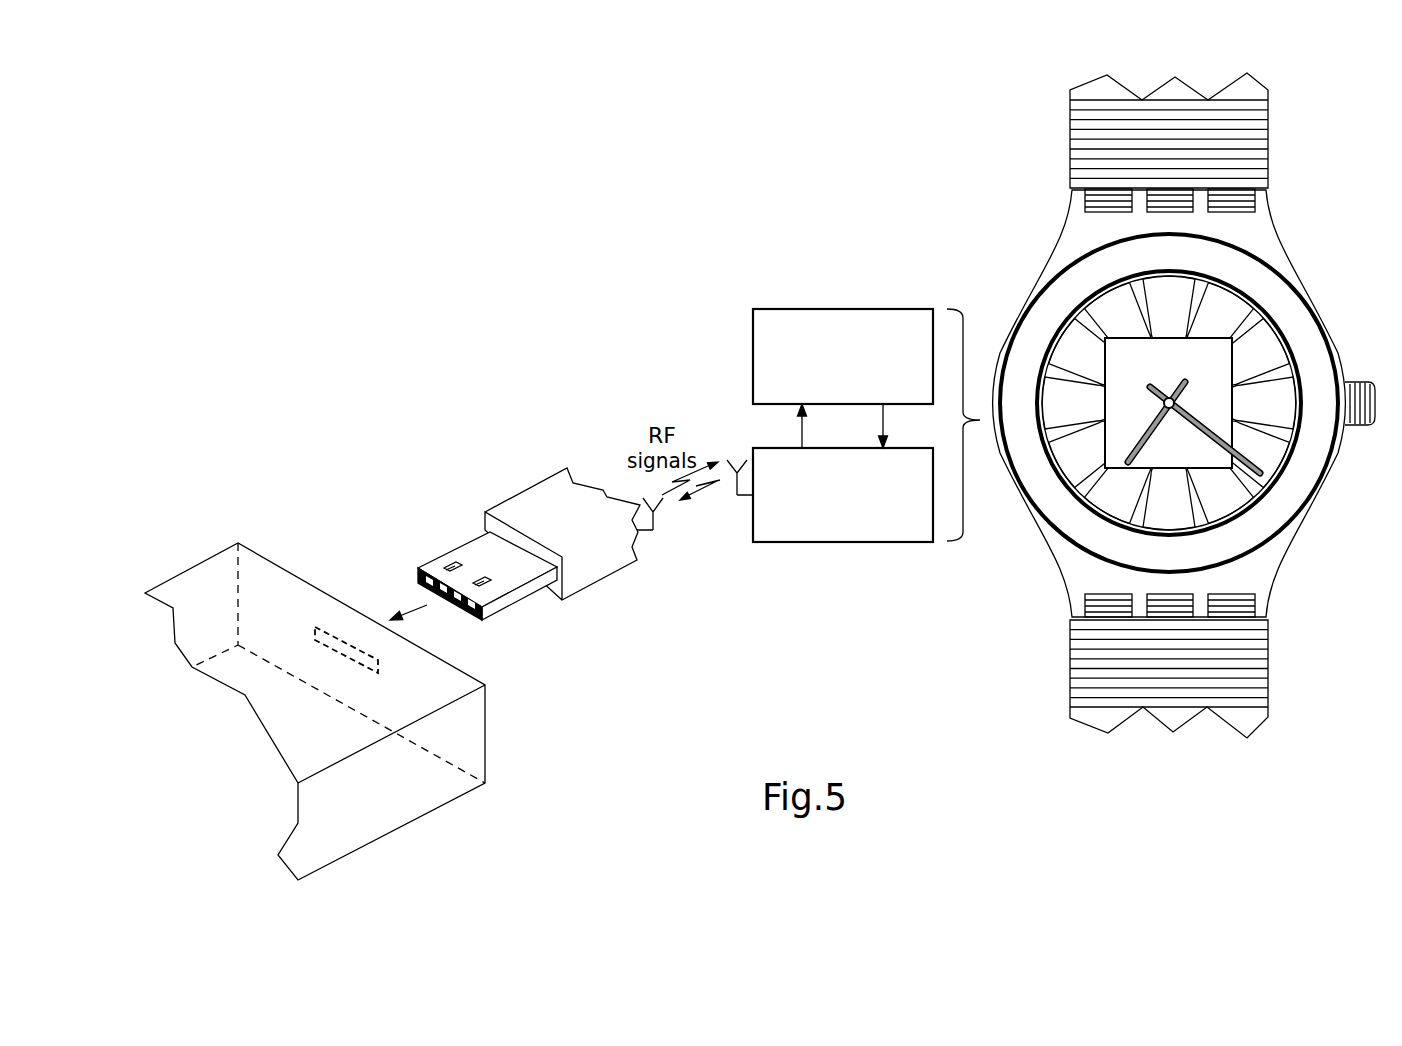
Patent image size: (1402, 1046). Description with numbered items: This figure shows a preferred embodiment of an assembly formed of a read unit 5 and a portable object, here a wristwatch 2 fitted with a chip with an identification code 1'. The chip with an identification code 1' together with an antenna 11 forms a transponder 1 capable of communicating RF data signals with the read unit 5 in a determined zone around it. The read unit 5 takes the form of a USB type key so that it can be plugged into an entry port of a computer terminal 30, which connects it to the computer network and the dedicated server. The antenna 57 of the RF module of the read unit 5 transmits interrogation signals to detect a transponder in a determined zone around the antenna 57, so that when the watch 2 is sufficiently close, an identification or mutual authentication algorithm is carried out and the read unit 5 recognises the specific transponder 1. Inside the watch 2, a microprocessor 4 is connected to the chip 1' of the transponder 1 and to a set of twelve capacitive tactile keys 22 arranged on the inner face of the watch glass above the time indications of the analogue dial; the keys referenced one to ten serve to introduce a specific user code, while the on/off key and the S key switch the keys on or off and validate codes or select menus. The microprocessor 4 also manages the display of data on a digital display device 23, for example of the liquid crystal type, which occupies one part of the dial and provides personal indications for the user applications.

The transponder 1 is at (855, 457).
The chip with an identification code 1' is at (843, 520).
The wristwatch 2 is at (1184, 405).
The microprocessor 4 is at (852, 320).
The read unit 5 is at (507, 510).
The antenna 11 is at (745, 497).
The tactile keys 22 is at (1283, 388).
The digital display device 23 is at (1240, 412).
The computer terminal 30 is at (295, 588).
The antenna of the RF module of the read unit 57 is at (653, 533).